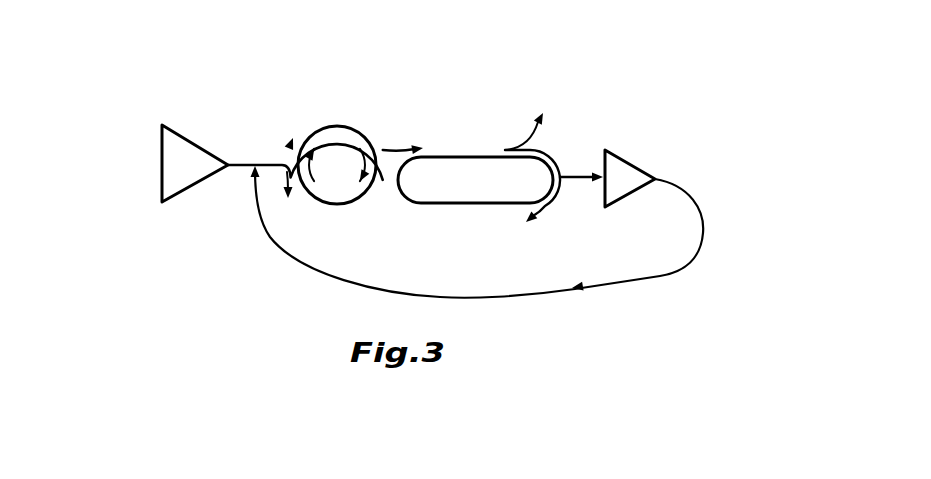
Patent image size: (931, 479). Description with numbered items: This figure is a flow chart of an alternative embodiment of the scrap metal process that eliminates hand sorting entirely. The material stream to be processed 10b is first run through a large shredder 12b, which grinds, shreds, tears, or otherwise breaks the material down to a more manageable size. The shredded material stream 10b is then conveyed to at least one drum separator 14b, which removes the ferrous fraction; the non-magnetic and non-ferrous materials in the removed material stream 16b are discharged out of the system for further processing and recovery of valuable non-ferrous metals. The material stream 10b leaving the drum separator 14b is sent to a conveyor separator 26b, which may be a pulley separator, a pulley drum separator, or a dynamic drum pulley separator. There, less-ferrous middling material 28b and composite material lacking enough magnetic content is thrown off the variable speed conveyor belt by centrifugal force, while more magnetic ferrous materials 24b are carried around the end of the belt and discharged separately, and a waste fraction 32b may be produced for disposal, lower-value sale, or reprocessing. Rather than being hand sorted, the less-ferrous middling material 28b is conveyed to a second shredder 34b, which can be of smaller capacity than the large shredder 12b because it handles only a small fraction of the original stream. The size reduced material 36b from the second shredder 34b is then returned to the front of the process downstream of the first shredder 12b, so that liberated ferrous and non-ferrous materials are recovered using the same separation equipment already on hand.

The material stream 10b is at (152, 165).
The large shredder 12b is at (188, 175).
The drum separator 14b is at (337, 193).
The removed material stream 16b is at (293, 200).
The more magnetic ferrous materials 24b is at (522, 198).
The conveyor separator 26b is at (420, 192).
The less-ferrous middling material 28b is at (573, 175).
The waste fraction 32b is at (532, 115).
The second shredder 34b is at (632, 158).
The size reduced material 36b is at (603, 275).